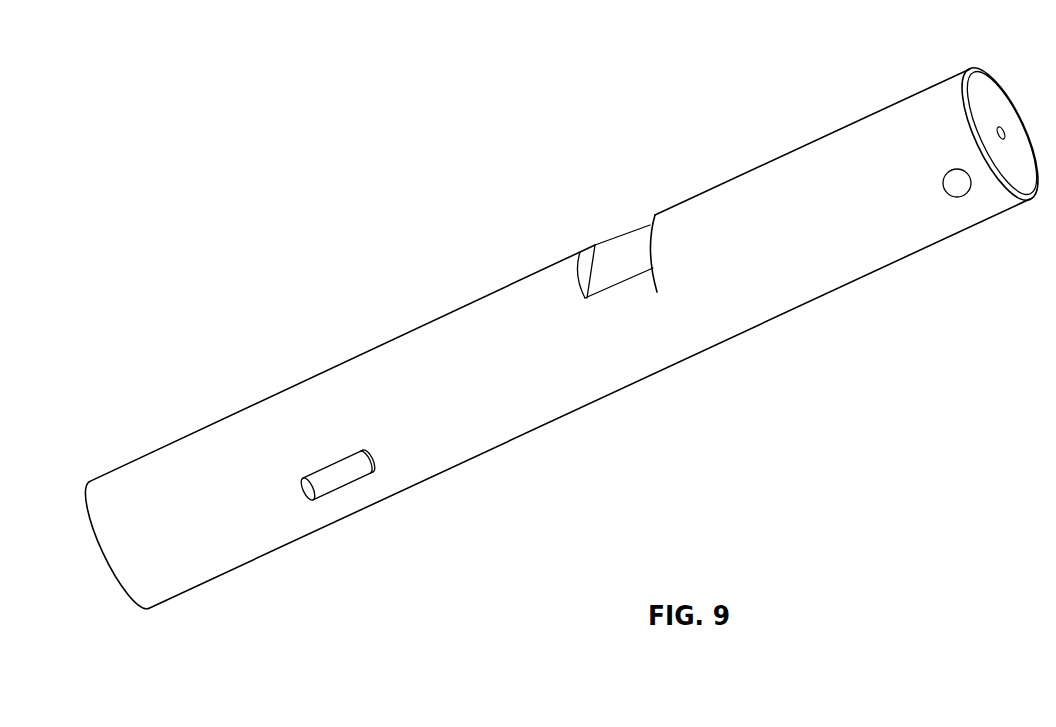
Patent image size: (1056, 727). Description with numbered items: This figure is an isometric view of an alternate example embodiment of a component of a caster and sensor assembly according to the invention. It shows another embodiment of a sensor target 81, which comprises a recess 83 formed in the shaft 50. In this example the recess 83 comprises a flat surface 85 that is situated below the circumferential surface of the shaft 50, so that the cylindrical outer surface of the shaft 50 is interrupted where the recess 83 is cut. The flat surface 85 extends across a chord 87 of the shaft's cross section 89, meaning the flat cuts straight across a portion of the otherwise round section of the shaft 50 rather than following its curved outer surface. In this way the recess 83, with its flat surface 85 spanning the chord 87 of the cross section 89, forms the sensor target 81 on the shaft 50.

The shaft 50 is at (435, 440).
The sensor target 81 is at (595, 177).
The recess 83 is at (657, 292).
The flat surface 85 is at (618, 262).
The chord 87 is at (583, 252).
The cross section 89 is at (980, 97).